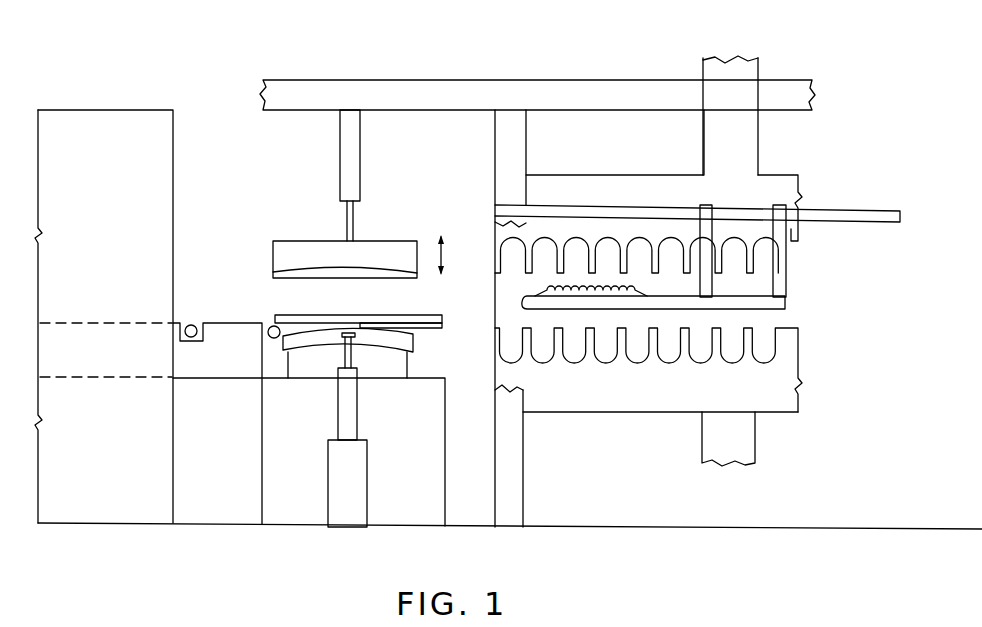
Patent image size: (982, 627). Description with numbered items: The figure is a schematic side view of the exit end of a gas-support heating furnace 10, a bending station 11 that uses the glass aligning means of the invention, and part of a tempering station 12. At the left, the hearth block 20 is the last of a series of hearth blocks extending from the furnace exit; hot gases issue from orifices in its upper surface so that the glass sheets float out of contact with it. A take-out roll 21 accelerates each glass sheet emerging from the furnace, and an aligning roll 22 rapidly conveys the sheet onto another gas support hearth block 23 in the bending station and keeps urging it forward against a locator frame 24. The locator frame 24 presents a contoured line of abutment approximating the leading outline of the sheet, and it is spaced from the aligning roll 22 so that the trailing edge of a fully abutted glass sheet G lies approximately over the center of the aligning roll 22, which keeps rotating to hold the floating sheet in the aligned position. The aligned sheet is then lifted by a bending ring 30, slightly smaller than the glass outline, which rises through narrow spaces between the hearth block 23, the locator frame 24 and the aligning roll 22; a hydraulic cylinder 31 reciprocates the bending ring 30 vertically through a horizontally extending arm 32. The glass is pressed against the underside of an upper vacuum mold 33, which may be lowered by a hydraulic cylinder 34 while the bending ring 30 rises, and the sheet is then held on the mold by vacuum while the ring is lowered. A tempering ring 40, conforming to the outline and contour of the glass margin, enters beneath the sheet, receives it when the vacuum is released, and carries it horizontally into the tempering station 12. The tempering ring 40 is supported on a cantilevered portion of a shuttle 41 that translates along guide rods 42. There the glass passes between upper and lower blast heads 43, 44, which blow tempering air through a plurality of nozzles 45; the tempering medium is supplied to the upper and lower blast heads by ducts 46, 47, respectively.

The heating furnace 10 is at (112, 110).
The bending station 11 is at (317, 72).
The tempering station 12 is at (600, 74).
The hearth block 20 is at (242, 330).
The take-out roll 21 is at (192, 325).
The aligning roll 22 is at (274, 325).
The gas support hearth block 23 is at (407, 364).
The locator frame 24 is at (441, 323).
The bending ring 30 is at (298, 346).
The hydraulic cylinder 31 is at (357, 421).
The horizontally extending arm 32 is at (352, 342).
The upper vacuum mold 33 is at (372, 280).
The hydraulic cylinder 34 is at (360, 158).
The tempering ring 40 is at (548, 294).
The shuttle 41 is at (786, 305).
The guide rods 42 is at (861, 222).
The upper blast head 43 is at (595, 175).
The lower blast head 44 is at (575, 413).
The nozzles 45 is at (775, 328).
The duct 46 is at (758, 146).
The duct 47 is at (757, 443).
The glass sheet G is at (312, 315).